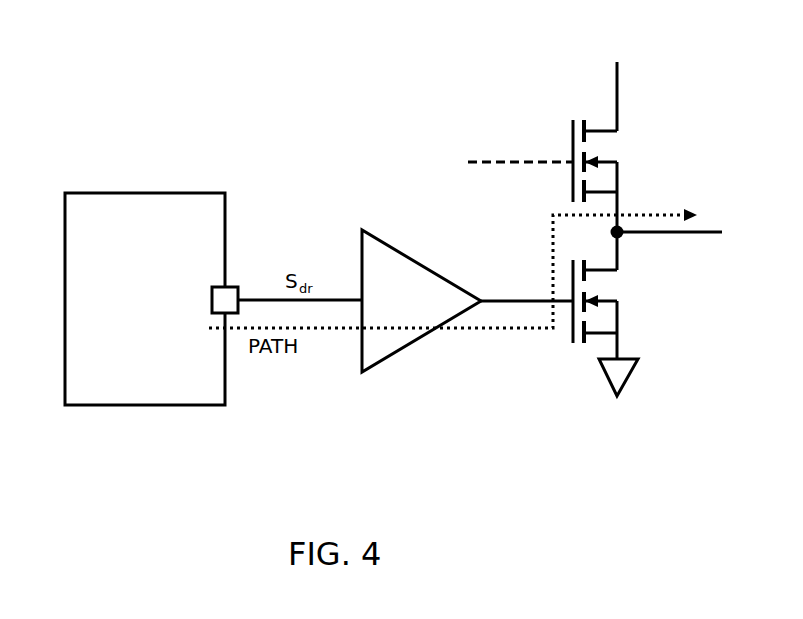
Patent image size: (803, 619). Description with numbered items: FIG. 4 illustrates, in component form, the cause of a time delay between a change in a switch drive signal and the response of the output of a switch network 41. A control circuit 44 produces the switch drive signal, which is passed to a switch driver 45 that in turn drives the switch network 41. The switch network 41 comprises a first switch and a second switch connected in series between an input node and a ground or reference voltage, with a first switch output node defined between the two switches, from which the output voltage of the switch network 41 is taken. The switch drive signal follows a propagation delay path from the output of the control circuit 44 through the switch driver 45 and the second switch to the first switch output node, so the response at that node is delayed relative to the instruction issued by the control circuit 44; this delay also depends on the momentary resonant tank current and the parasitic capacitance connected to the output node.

The switch network 41 is at (572, 446).
The control circuit 44 is at (151, 299).
The switch driver 45 is at (421, 301).